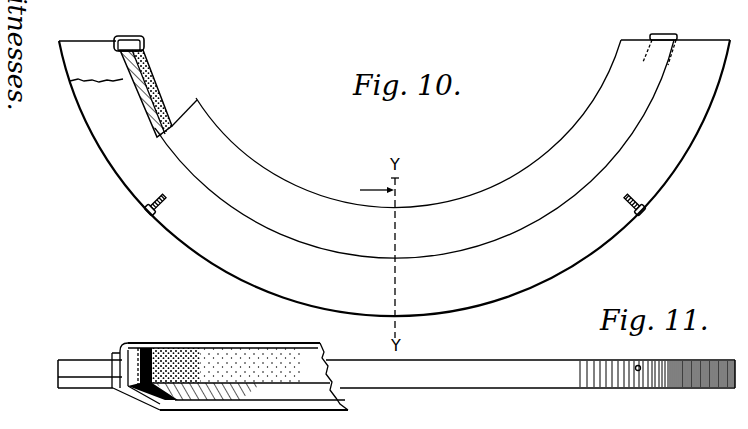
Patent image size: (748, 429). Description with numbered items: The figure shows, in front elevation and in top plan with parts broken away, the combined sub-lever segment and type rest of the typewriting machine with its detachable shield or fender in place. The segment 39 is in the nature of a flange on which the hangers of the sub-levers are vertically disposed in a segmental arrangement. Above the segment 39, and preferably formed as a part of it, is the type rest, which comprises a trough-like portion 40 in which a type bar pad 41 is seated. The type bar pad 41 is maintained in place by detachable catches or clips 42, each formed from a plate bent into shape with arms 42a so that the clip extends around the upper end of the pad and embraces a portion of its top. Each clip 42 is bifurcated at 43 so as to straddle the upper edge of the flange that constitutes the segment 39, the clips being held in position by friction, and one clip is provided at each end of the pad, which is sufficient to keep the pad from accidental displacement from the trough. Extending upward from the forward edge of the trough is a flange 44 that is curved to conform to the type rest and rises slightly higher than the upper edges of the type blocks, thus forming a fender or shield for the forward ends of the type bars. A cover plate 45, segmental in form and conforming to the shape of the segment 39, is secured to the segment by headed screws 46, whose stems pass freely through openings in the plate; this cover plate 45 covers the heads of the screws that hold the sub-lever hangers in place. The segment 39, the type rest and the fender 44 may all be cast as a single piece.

In FIG. 10, the segment 39 is at (86, 40).
In FIG. 11, the segment 39 is at (75, 363).
In FIG. 10, the trough-like portion 40 is at (148, 110).
In FIG. 11, the trough-like portion 40 is at (230, 343).
In FIG. 10, the type bar pad 41 is at (152, 90).
In FIG. 11, the type bar pad 41 is at (229, 374).
In FIG. 10, the detachable clip 42 is at (137, 41).
In FIG. 11, the detachable clip 42 is at (120, 350).
In FIG. 10, the clip arms 42a is at (672, 68).
In FIG. 11, the clip arms 42a is at (147, 347).
In FIG. 11, the bifurcation 43 is at (117, 389).
In FIG. 10, the flange 44 is at (414, 149).
In FIG. 11, the flange 44 is at (150, 401).
In FIG. 10, the cover plate 45 is at (394, 178).
In FIG. 11, the cover plate 45 is at (65, 388).
In FIG. 10, the headed screw 46 is at (150, 216).